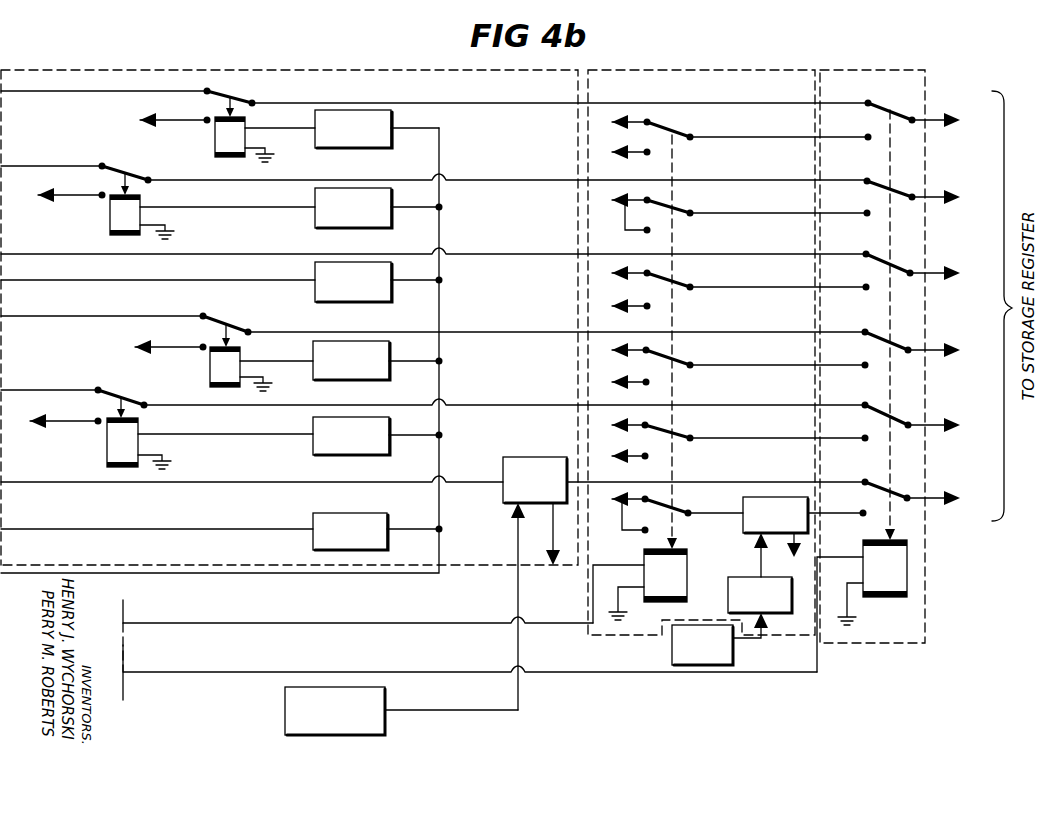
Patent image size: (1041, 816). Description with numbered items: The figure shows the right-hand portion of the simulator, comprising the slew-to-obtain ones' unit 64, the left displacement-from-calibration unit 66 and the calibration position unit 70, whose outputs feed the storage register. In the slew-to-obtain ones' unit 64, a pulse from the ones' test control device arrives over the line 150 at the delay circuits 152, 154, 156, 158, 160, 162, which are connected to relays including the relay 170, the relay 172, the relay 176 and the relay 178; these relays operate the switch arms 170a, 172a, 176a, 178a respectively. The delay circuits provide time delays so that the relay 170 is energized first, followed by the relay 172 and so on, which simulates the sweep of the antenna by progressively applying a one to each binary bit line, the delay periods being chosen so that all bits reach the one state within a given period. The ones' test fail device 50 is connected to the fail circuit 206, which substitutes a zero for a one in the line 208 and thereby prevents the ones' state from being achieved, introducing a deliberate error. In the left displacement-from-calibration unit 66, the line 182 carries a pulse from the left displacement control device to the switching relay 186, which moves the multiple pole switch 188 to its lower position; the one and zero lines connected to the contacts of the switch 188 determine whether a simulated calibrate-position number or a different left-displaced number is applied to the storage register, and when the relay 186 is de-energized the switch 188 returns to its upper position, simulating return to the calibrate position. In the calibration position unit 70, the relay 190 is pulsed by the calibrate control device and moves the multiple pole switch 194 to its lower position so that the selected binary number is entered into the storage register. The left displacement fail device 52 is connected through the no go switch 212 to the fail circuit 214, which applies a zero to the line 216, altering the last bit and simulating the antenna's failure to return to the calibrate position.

The slew-to-obtain ones' unit 64 is at (174, 70).
The left displacement-from-calibration unit 66 is at (711, 70).
The calibration position unit 70 is at (884, 70).
The switch arm 170a is at (228, 99).
The relay 170 is at (213, 140).
The switch arm 172a is at (112, 171).
The relay 172 is at (107, 206).
The switch arm 176a is at (222, 321).
The relay 176 is at (208, 369).
The switch arm 178a is at (112, 396).
The relay 178 is at (105, 440).
The delay circuit 152 is at (394, 123).
The delay circuit 154 is at (394, 199).
The delay circuit 156 is at (392, 272).
The delay circuit 158 is at (390, 351).
The delay circuit 160 is at (390, 426).
The delay circuit 162 is at (378, 514).
The line 150 is at (306, 573).
The line 182 is at (218, 623).
The switching relay 186 is at (687, 565).
The multiple pole switch 188 is at (672, 321).
The relay 190 is at (863, 556).
The multiple pole switch 194 is at (890, 318).
The fail circuit 206 is at (515, 457).
The line 208 is at (652, 478).
The no go switch 212 is at (750, 578).
The fail circuit 214 is at (758, 499).
The line 216 is at (852, 510).
The ones' test fail device 50 is at (279, 714).
The left displacement fail device 52 is at (672, 654).